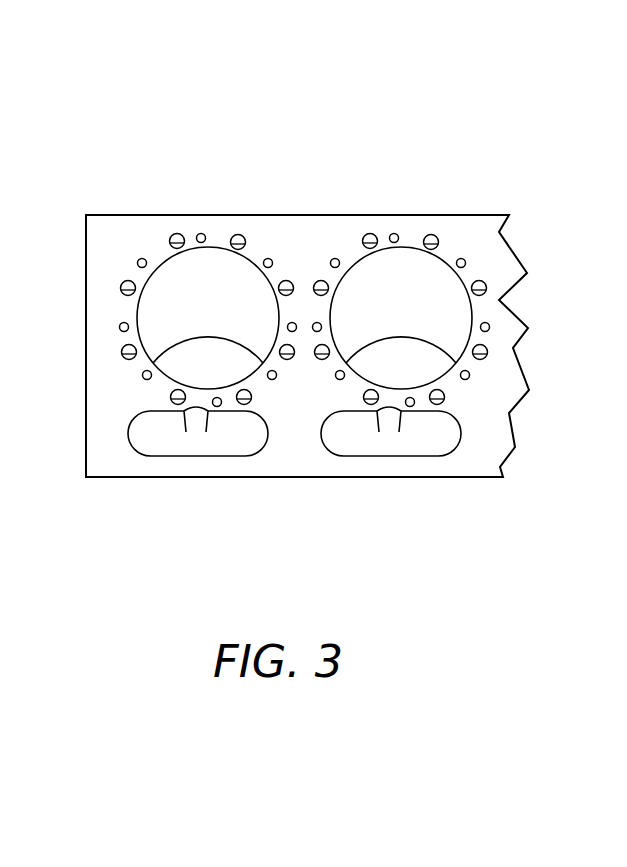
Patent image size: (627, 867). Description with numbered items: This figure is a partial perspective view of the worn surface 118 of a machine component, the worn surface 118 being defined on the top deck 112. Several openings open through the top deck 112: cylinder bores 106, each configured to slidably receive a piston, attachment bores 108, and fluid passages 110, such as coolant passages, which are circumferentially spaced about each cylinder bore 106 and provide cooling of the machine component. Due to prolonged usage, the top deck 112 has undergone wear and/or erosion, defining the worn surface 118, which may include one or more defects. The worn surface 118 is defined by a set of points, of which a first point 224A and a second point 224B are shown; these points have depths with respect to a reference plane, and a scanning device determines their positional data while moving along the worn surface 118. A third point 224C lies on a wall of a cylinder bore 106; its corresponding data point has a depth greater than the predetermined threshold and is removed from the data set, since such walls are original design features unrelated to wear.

The top deck 112 is at (74, 176).
The cylinder bore 106 is at (218, 322).
The attachment bore 108 is at (177, 233).
The fluid passage 110 is at (201, 233).
The worn surface 118 is at (335, 248).
The first point 224A is at (290, 233).
The second point 224B is at (497, 443).
The third point 224C is at (163, 309).